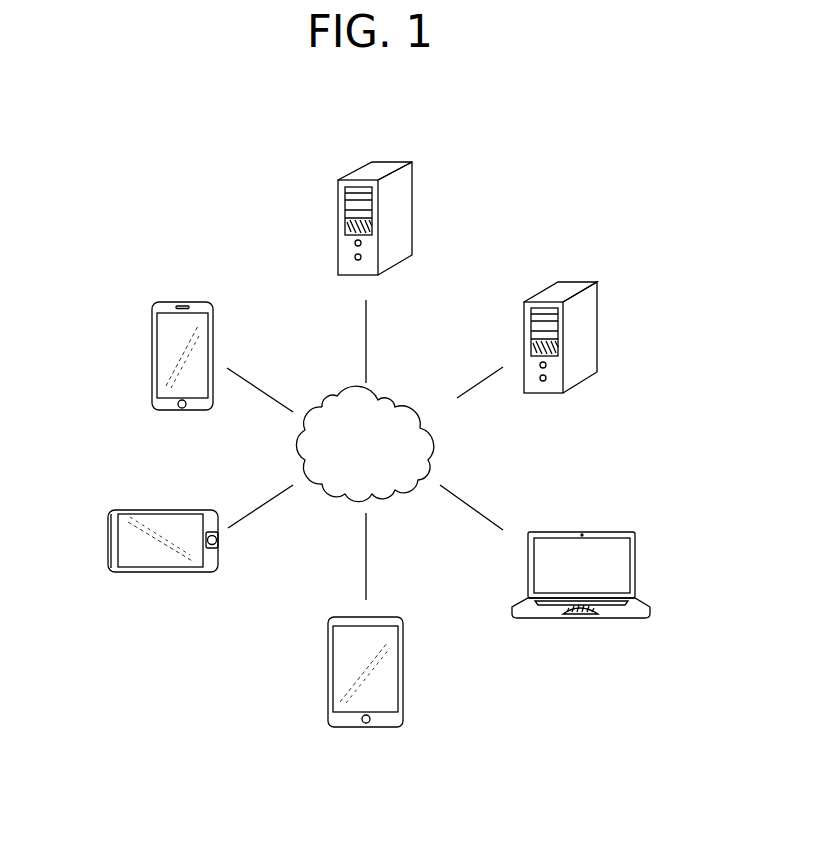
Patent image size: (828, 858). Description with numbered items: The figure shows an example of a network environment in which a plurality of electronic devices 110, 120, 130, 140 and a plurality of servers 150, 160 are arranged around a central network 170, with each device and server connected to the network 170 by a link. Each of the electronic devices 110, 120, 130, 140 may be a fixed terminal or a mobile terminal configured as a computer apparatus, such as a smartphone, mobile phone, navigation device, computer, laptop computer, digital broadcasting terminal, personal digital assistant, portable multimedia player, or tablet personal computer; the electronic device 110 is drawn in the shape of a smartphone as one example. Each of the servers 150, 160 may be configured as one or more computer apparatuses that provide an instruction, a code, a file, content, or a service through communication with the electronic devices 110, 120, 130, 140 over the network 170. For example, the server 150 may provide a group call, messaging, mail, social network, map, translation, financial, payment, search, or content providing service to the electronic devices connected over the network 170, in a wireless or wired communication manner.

The electronic device 110 is at (152, 357).
The electronic device 120 is at (108, 541).
The electronic device 130 is at (405, 670).
The electronic device 140 is at (635, 567).
The server 150 is at (597, 327).
The server 160 is at (412, 207).
The network 170 is at (387, 403).